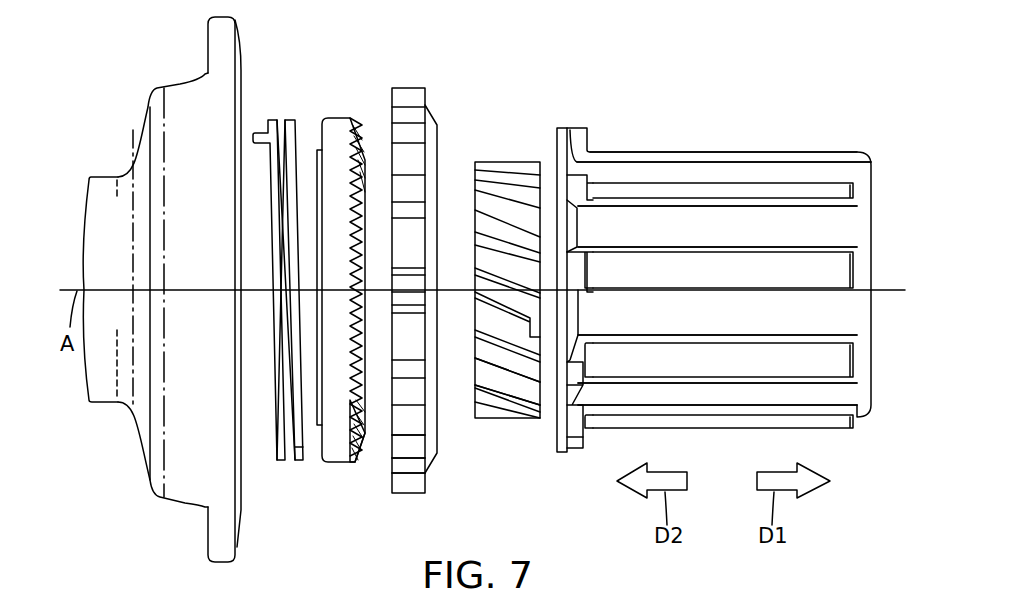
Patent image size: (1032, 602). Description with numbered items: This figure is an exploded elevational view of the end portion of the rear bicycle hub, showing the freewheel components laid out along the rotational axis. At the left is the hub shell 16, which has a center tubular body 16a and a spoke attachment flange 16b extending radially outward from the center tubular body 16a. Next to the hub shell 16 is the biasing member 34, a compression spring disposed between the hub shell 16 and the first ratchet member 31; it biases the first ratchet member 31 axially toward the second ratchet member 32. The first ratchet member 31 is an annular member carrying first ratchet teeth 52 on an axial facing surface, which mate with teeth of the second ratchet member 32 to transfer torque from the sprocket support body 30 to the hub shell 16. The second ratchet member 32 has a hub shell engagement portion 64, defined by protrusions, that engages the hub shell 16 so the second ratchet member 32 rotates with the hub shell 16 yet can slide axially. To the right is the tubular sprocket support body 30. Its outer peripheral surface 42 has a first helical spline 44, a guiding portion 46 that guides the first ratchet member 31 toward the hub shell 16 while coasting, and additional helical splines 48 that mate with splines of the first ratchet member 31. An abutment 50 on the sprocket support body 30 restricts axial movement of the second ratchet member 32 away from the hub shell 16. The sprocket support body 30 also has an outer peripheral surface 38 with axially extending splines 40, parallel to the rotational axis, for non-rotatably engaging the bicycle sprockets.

The hub shell 16 is at (175, 83).
The center tubular body 16a is at (101, 177).
The spoke attachment flange 16b is at (222, 16).
The biasing member 34 is at (283, 105).
The first ratchet member 31 is at (345, 108).
The first ratchet tooth 52 is at (360, 440).
The second ratchet member 32 is at (398, 82).
The hub shell engagement portion 64 is at (413, 482).
The outer peripheral surface 42 is at (487, 203).
The first helical spline 44 is at (483, 282).
The guiding portion 46 is at (535, 333).
The additional helical splines 48 is at (488, 398).
The abutment 50 is at (563, 128).
The sprocket support body 30 is at (652, 132).
The outer peripheral surface 38 is at (724, 175).
The axially extending splines 40 is at (827, 157).